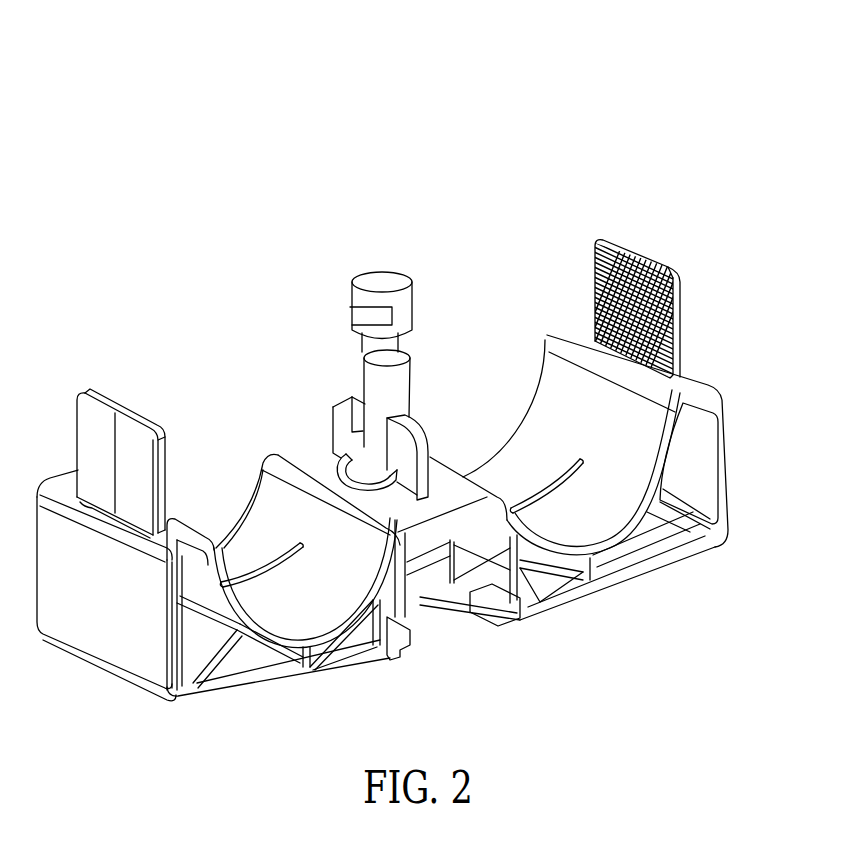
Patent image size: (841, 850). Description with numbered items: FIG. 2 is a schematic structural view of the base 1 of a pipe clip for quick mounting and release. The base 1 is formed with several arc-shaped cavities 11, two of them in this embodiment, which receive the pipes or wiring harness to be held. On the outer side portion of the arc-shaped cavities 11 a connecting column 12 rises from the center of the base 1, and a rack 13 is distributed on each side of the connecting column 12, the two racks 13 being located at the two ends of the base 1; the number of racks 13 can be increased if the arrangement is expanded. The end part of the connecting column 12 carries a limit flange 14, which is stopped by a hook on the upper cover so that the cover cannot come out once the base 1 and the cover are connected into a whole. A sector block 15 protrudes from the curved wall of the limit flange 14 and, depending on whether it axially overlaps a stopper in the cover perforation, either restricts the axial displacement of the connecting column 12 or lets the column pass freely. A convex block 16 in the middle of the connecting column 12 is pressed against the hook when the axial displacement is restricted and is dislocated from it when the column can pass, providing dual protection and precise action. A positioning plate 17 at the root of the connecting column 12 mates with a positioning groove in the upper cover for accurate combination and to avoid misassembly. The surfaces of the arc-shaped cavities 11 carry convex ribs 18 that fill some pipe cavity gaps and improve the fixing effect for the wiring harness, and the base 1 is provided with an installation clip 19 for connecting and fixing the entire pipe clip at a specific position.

The base 1 is at (193, 122).
The arc-shaped cavity 11 is at (581, 519).
The connecting column 12 is at (333, 407).
The rack 13 is at (645, 280).
The limit flange 14 is at (413, 300).
The sector block 15 is at (363, 313).
The convex block 16 is at (392, 393).
The positioning plate 17 is at (402, 452).
The convex rib 18 is at (267, 583).
The installation clip 19 is at (494, 653).